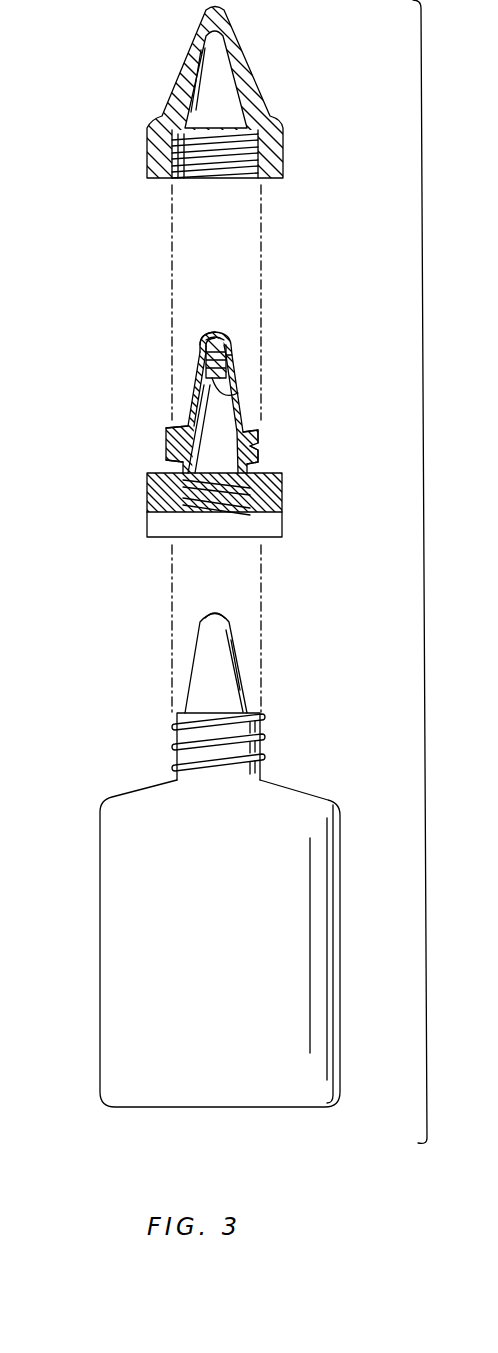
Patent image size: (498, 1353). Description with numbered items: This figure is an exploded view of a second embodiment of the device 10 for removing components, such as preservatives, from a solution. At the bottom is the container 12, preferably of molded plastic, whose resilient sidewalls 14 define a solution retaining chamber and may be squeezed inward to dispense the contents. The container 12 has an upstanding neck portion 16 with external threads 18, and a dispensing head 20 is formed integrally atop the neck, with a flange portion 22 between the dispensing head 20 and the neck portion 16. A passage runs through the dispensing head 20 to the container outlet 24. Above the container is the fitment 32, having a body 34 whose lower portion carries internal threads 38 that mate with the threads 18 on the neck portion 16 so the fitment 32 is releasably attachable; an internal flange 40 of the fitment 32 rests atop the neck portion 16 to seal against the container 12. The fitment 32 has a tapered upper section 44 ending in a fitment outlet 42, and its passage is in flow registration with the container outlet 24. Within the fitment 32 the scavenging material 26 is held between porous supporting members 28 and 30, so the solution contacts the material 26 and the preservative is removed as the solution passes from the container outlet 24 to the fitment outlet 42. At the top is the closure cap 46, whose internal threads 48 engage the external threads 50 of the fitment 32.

The device 10 is at (424, 560).
The container 12 is at (338, 792).
The resilient sidewalls 14 is at (100, 941).
The neck portion 16 is at (177, 715).
The external threads 18 is at (262, 737).
The dispensing head 20 is at (229, 641).
The flange portion 22 is at (257, 704).
The container outlet 24 is at (215, 611).
The scavenging material 26 is at (232, 357).
The porous supporting member 28 is at (233, 357).
The porous supporting member 30 is at (240, 393).
The fitment 32 is at (159, 419).
The body 34 is at (257, 452).
The internal threads 38 is at (165, 455).
The internal flange 40 is at (270, 484).
The fitment outlet 42 is at (215, 334).
The tapered upper section 44 is at (200, 357).
The closure cap 46 is at (144, 63).
The internal threads 48 is at (207, 180).
The external threads 50 is at (258, 432).